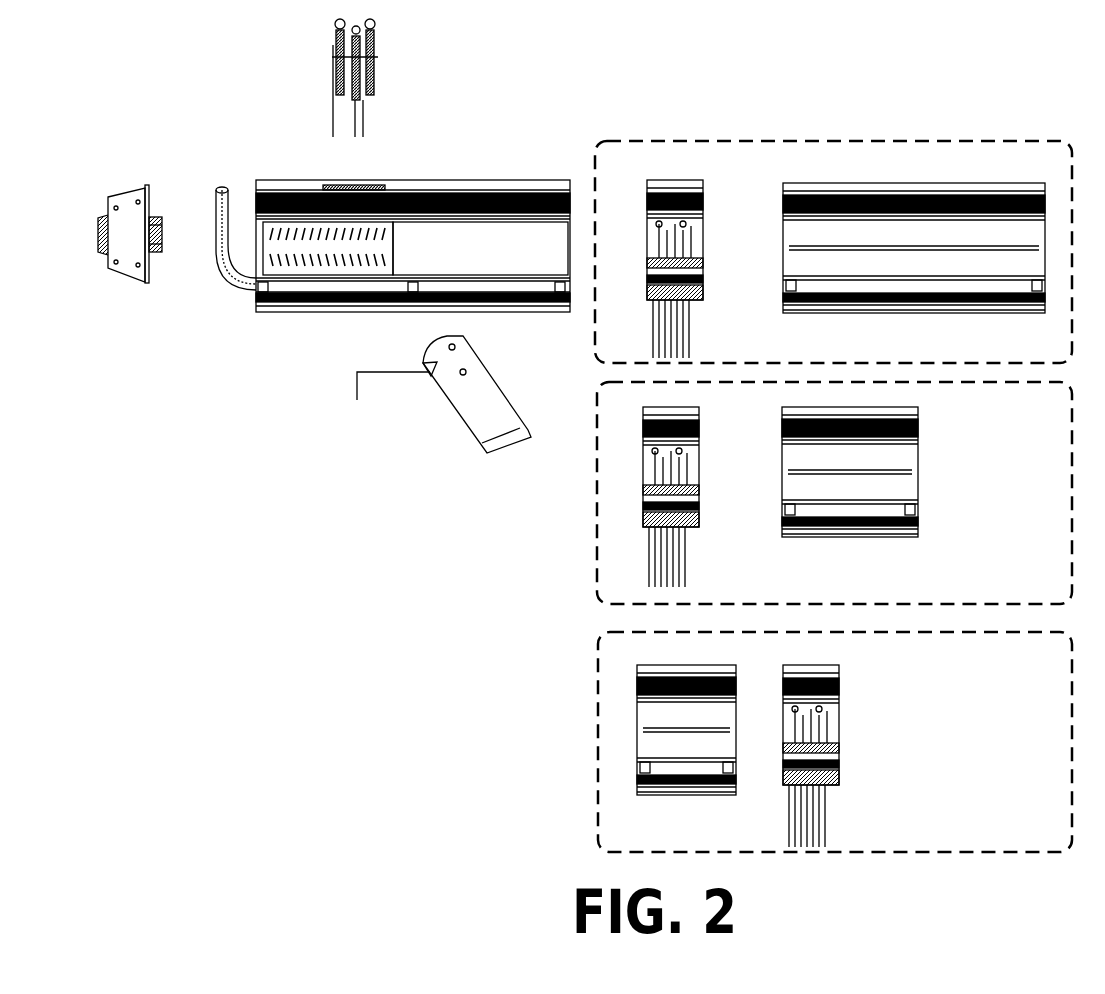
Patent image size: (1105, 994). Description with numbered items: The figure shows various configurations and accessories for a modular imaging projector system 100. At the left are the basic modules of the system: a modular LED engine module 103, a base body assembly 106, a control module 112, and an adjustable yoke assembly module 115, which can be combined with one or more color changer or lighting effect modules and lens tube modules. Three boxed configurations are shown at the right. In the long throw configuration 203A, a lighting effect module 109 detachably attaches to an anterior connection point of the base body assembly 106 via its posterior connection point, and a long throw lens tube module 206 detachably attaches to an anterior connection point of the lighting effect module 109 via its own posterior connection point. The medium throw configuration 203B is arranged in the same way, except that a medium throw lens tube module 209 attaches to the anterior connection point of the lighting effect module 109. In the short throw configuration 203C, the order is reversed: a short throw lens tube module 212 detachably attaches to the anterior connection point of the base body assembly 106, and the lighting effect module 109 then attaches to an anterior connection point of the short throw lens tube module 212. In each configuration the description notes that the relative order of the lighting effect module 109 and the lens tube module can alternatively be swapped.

The modular imaging projector system 100 is at (170, 88).
The modular LED engine module 103 is at (129, 283).
The base body assembly 106 is at (412, 168).
The lighting effect module 109 is at (681, 162).
The control module 112 is at (321, 46).
The adjustable yoke assembly module 115 is at (385, 396).
The long throw configuration 203A is at (833, 252).
The medium throw configuration 203B is at (834, 493).
The short throw configuration 203C is at (835, 742).
The long throw lens tube module 206 is at (862, 166).
The medium throw lens tube module 209 is at (941, 442).
The short throw lens tube module 212 is at (609, 684).